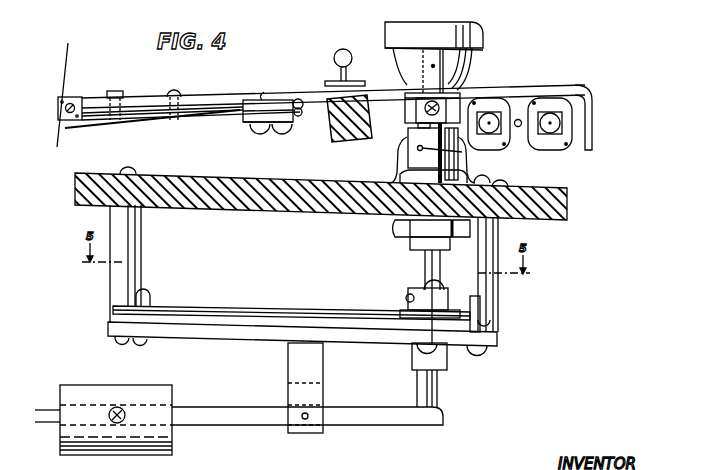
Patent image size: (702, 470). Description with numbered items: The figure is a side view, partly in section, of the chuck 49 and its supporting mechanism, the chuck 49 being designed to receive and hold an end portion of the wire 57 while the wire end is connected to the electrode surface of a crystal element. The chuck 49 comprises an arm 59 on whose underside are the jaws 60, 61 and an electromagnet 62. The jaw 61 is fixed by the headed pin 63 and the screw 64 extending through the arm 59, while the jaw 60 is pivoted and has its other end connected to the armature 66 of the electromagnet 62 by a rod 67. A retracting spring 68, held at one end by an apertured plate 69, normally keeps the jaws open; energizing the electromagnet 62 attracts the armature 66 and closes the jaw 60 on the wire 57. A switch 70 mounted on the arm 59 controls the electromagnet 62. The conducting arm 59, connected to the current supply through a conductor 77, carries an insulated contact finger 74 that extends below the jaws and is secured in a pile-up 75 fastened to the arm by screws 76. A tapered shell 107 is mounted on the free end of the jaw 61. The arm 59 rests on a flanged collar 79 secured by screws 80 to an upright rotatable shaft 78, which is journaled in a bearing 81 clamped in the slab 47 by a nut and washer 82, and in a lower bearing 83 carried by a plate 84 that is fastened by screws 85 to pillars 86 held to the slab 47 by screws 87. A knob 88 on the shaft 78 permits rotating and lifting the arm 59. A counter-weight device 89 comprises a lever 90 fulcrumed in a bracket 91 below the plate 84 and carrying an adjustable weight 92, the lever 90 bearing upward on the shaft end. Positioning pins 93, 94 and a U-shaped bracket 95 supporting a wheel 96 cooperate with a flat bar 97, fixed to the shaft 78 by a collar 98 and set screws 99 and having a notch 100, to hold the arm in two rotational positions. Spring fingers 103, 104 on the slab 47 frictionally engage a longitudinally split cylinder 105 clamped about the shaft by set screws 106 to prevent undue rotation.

The slab 47 is at (278, 212).
The chuck 49 is at (556, 168).
The wire 57 is at (66, 58).
The arm 59 is at (272, 100).
The jaw 60 is at (222, 110).
The jaw 61 is at (136, 118).
The electromagnet 62 is at (587, 104).
The headed pin 63 is at (120, 92).
The screw 64 is at (179, 92).
The armature 66 is at (540, 115).
The rod 67 is at (518, 119).
The retracting spring 68 is at (300, 99).
The apertured plate 69 is at (262, 100).
The switch 70 is at (352, 58).
The contact finger 74 is at (90, 136).
The pile-up 75 is at (246, 124).
The screws 76 is at (275, 134).
The conductor 77 is at (349, 118).
The upright rotatable shaft 78 is at (420, 258).
The flanged collar 79 is at (452, 96).
The screws 80 is at (425, 113).
The bearing 81 is at (433, 153).
The nut and washer 82 is at (394, 226).
The lower bearing 83 is at (445, 368).
The plate 84 is at (495, 343).
The screws 85 is at (118, 344).
The pillars 86 is at (110, 288).
The screws 87 is at (130, 172).
The knob 88 is at (483, 34).
The counter-weight device 89 is at (345, 426).
The lever 90 is at (423, 417).
The bracket 91 is at (323, 378).
The weight 92 is at (172, 442).
The positioning pin 93 is at (148, 296).
The positioning pin 94 is at (405, 298).
The U-shaped bracket 95 is at (497, 323).
The wheel 96 is at (500, 301).
The flat bar 97 is at (244, 306).
The collar 98 is at (444, 290).
The set screws 99 is at (410, 292).
The notch 100 is at (400, 312).
The spring finger 103 is at (489, 171).
The spring finger 104 is at (407, 145).
The longitudinally split cylinder 105 is at (405, 160).
The set screws 106 is at (457, 160).
The tapered shell 107 is at (74, 97).